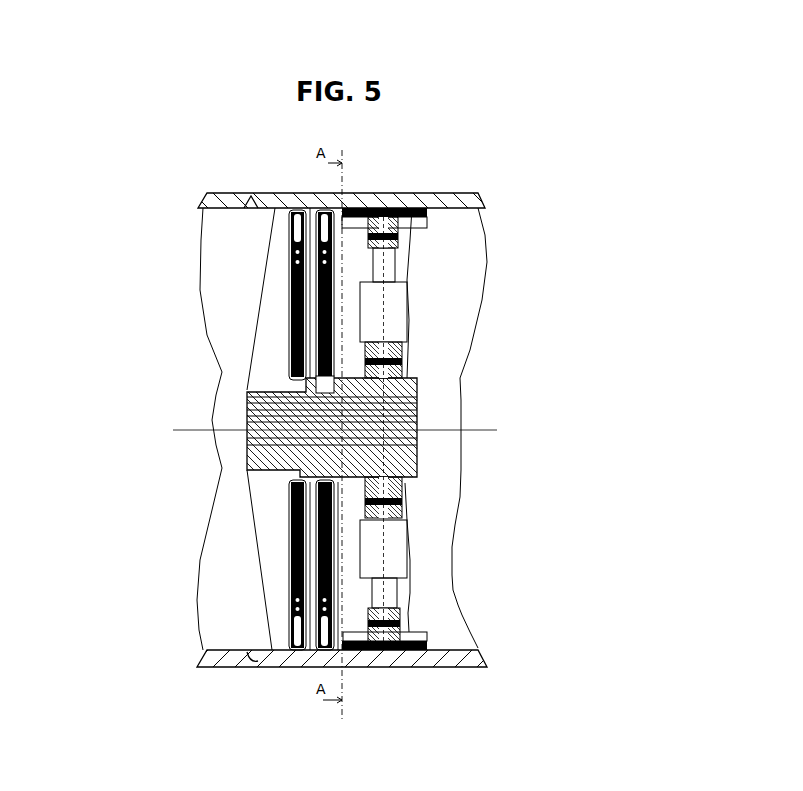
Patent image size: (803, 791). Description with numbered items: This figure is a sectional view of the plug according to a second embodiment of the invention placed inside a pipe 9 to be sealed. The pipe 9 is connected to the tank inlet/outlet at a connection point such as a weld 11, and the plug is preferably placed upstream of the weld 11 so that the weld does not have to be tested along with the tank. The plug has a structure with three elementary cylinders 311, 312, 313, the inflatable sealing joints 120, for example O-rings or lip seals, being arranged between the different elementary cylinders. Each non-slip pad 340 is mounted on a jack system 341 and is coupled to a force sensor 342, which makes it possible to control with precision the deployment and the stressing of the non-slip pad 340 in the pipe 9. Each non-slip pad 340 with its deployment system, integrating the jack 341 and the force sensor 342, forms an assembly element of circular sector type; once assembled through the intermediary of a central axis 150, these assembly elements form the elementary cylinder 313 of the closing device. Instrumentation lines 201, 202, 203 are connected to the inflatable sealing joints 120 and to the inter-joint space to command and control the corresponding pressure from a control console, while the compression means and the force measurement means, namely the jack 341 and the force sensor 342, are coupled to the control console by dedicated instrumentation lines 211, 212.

The pipe 9 is at (452, 198).
The weld 11 is at (250, 663).
The inflatable sealing joints 120 is at (327, 210).
The central axis 150 is at (417, 432).
The instrumentation line 201 is at (247, 395).
The instrumentation line 202 is at (247, 405).
The instrumentation line 203 is at (247, 412).
The instrumentation line 211 is at (247, 418).
The instrumentation line 212 is at (247, 424).
The elementary cylinder 311 is at (280, 633).
The elementary cylinder 312 is at (312, 635).
The elementary cylinder 313 is at (353, 620).
The non-slip pad 340 is at (425, 213).
The jack 341 is at (398, 327).
The force sensor 342 is at (398, 238).